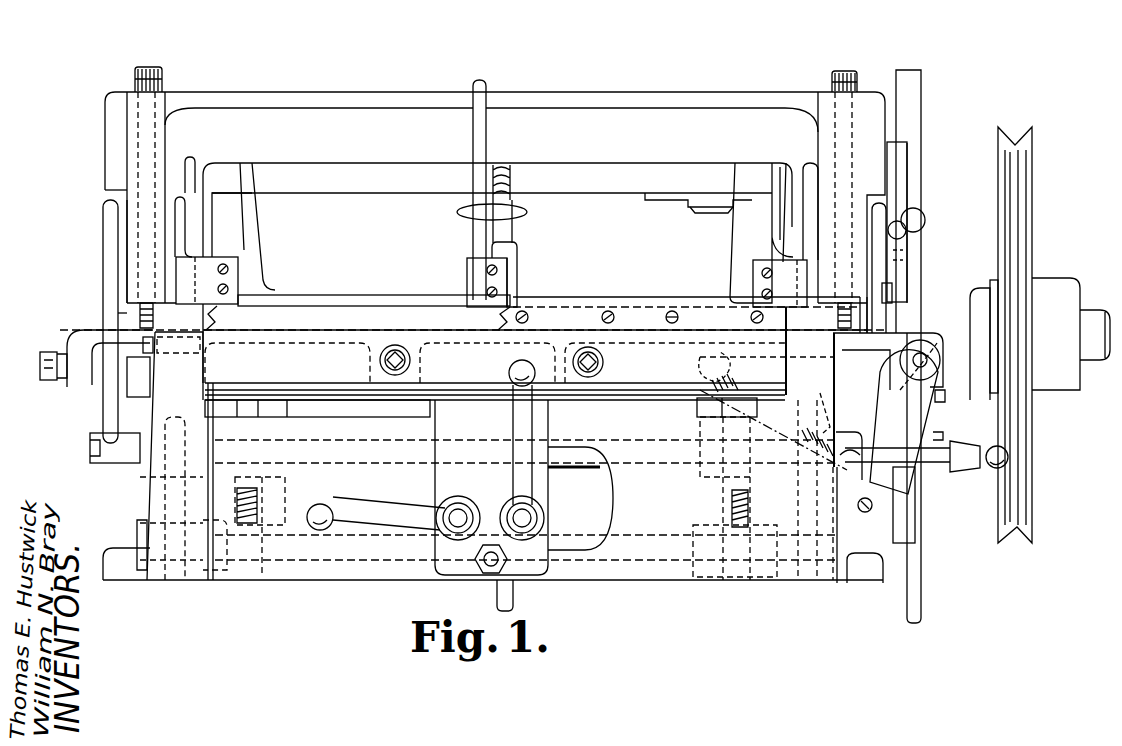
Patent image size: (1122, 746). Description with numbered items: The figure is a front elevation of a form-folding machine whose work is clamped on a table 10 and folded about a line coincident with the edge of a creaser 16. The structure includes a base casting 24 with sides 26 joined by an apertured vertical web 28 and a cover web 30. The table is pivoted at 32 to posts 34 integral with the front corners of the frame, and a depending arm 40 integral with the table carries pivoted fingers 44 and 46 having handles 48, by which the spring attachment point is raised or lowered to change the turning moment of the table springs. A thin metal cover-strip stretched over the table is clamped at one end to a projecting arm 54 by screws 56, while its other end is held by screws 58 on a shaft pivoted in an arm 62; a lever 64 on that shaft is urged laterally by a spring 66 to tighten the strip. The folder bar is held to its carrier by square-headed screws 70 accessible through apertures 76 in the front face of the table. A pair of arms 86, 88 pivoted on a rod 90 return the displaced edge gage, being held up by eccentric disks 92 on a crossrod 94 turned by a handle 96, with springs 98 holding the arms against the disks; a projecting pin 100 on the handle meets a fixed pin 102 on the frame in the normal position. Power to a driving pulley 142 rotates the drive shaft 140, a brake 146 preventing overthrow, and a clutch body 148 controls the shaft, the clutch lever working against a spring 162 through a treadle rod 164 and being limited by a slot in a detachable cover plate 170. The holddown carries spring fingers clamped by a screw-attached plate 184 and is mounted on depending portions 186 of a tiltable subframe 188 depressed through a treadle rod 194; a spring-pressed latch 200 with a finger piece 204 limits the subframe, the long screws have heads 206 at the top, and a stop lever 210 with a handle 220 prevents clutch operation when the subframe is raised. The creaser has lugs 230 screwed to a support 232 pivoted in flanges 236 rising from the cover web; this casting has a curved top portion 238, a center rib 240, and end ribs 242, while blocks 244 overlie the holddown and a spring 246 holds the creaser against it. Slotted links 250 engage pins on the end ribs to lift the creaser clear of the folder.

The table 10 is at (473, 356).
The creaser 16 is at (340, 318).
The base casting 24 is at (372, 572).
The sides 26 is at (185, 490).
The apertured vertical web 28 is at (635, 560).
The cover web 30 is at (315, 295).
The pivot 32 is at (183, 350).
The posts 34 is at (155, 495).
The depending arm 40 is at (455, 563).
The finger 44 is at (497, 437).
The finger 46 is at (378, 498).
The handles 48 is at (321, 505).
The projecting arm 54 is at (88, 380).
The screws 56 is at (48, 352).
The screws 58 is at (945, 398).
The arm 62 is at (880, 340).
The lever 64 is at (892, 482).
The spring 66 is at (722, 380).
The square-headed screws 70 is at (412, 362).
The apertures 76 is at (380, 362).
The arm 86 is at (258, 490).
The arm 88 is at (730, 492).
The rod 90 is at (570, 535).
The eccentric disks 92 is at (274, 416).
The crossrod 94 is at (566, 466).
The handle 96 is at (978, 468).
The springs 98 is at (256, 510).
The projecting pin 100 is at (810, 387).
The fixed pin 102 is at (837, 437).
The drive shaft 140 is at (1100, 336).
The driving pulley 142 is at (1020, 208).
The brake 146 is at (690, 193).
The clutch body 148 is at (958, 378).
The spring 162 is at (864, 513).
The treadle rod 164 is at (915, 576).
The cover plate 170 is at (880, 293).
The screw-attached plate 184 is at (642, 318).
The depending portions 186 is at (131, 256).
The tiltable subframe 188 is at (505, 93).
The treadle rod 194 is at (512, 221).
The spring-pressed latch 200 is at (905, 183).
The finger piece 204 is at (906, 230).
The heads 206 is at (150, 68).
The lever 210 is at (912, 103).
The handle 220 is at (920, 210).
The lugs 230 is at (507, 260).
The support 232 is at (330, 106).
The flanges 236 is at (247, 212).
The curved top portion 238 is at (603, 166).
The center rib 240 is at (478, 237).
The end ribs 242 is at (240, 252).
The blocks 244 is at (240, 274).
The spring 246 is at (512, 190).
The links 250 is at (182, 233).